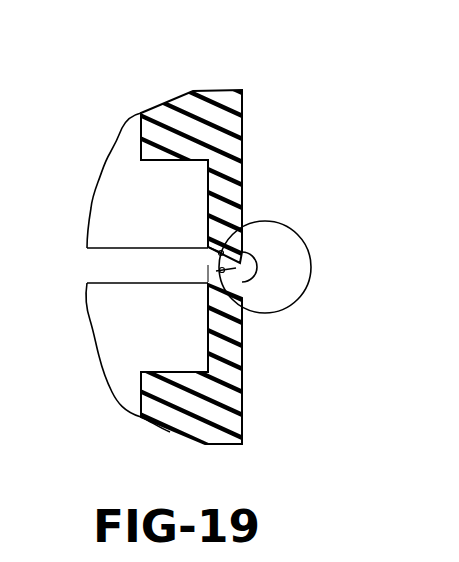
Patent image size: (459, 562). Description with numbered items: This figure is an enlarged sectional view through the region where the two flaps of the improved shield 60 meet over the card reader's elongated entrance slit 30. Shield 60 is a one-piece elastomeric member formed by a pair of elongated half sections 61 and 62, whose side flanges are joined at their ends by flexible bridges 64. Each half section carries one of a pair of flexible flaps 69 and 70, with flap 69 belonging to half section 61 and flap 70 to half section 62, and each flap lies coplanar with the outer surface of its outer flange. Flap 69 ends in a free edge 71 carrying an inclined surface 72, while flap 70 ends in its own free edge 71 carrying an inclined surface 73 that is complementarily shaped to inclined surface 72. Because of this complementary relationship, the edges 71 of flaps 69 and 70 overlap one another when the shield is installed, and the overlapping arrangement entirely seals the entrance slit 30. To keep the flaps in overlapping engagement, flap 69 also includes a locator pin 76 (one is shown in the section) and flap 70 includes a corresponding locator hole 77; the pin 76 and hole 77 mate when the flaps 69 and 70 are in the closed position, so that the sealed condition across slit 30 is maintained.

The entrance slit 30 is at (207, 273).
The shield 60 is at (258, 98).
The half section 61 is at (215, 82).
The half section 62 is at (245, 434).
The flexible bridge 64 is at (273, 240).
The flap 69 is at (242, 194).
The flap 70 is at (242, 333).
The free edge 71 is at (208, 246).
The inclined surface 72 is at (218, 251).
The inclined surface 73 is at (218, 271).
The locator pin 76 is at (222, 268).
The locator hole 77 is at (237, 272).